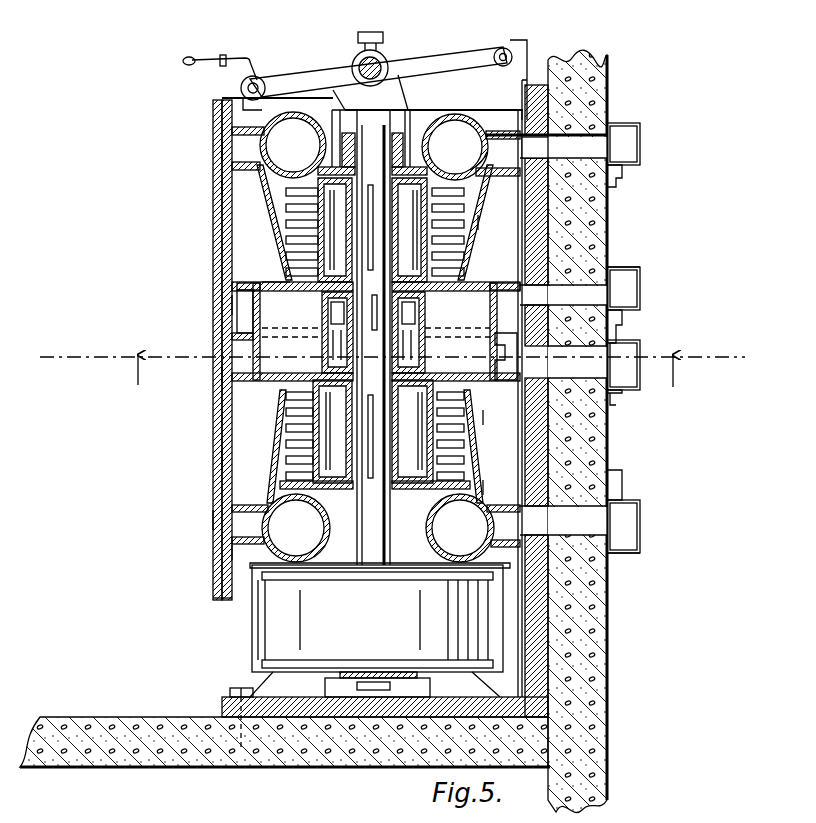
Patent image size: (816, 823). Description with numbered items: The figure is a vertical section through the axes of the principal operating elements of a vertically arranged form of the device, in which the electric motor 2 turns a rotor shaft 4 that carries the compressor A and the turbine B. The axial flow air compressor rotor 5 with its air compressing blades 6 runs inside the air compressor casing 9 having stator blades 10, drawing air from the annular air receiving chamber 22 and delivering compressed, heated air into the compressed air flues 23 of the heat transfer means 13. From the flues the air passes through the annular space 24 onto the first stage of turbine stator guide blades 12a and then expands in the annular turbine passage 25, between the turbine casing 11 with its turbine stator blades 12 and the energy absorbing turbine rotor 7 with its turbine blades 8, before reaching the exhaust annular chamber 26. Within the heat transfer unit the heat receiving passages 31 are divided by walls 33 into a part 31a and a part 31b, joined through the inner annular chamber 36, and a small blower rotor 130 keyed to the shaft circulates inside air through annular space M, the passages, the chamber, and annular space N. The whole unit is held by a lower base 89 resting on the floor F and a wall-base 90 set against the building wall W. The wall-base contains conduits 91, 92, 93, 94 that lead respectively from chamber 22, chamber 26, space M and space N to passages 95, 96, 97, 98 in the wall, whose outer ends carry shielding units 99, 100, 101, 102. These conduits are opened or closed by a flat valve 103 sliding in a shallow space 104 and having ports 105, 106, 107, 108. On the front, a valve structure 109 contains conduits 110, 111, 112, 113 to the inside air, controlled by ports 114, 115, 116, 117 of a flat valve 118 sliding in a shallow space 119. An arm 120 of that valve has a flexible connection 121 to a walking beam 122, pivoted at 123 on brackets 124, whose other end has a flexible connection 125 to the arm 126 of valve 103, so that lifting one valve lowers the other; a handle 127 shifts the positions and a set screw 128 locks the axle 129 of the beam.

The electric motor 2 is at (377, 618).
The rotor shaft 4 is at (448, 686).
The axial flow air compressor rotor 5 is at (412, 472).
The air compressing blades 6 is at (448, 495).
The energy absorbing turbine rotor 7 is at (410, 262).
The turbine blades 8 is at (287, 188).
The air compressor casing 9 is at (483, 462).
The stator blades 10 is at (478, 407).
The turbine casing 11 is at (265, 195).
The turbine stator blades 12 is at (268, 205).
The first stage of turbine stator guide blades 12a is at (478, 262).
The heat transfer means 13 is at (275, 270).
The air receiving chamber 22 is at (376, 528).
The compressed air flues 23 is at (431, 332).
The annular space 24 is at (305, 287).
The annular turbine passage 25 is at (478, 165).
The exhaust annular chamber 26 is at (376, 146).
The heat receiving passages 31 is at (437, 365).
The heat receiving space part 31a is at (252, 392).
The heat receiving space part 31b is at (248, 318).
The dividing walls 33 is at (302, 343).
The inner annular chamber 36 is at (445, 330).
The lower base 89 is at (222, 710).
The wall-base 90 is at (540, 85).
The conduit 91 is at (563, 520).
The conduit 92 is at (546, 146).
The conduit 93 is at (640, 350).
The conduit 94 is at (563, 293).
The passage 95 is at (612, 520).
The passage 96 is at (616, 152).
The passage 97 is at (635, 380).
The passage 98 is at (618, 268).
The shielding unit 99 is at (645, 546).
The shielding unit 100 is at (628, 395).
The shielding unit 101 is at (640, 290).
The shielding unit 102 is at (640, 126).
The flat valve 103 is at (513, 110).
The shallow space 104 is at (533, 645).
The port 105 is at (527, 522).
The port 106 is at (522, 148).
The port 107 is at (618, 330).
The port 108 is at (593, 233).
The valve structure 109 is at (216, 108).
The conduit 110 is at (222, 520).
The conduit 111 is at (220, 150).
The conduit 112 is at (220, 350).
The conduit 113 is at (220, 292).
The port 114 is at (230, 556).
The port 115 is at (220, 186).
The port 116 is at (226, 380).
The port 117 is at (222, 305).
The flat valve 118 is at (228, 463).
The shallow space 119 is at (228, 600).
The arm 120 is at (238, 84).
The flexible connection 121 is at (262, 78).
The walking beam 122 is at (412, 75).
The pivot 123 is at (385, 42).
The brackets 124 is at (340, 94).
The flexible connection 125 is at (498, 50).
The arm 126 is at (530, 45).
The handle 127 is at (183, 64).
The set screw 128 is at (352, 58).
The axle 129 is at (398, 96).
The blower rotor 130 is at (313, 347).
The annular space N is at (250, 286).
The turbine B is at (484, 218).
The annular space M is at (493, 422).
The compressor A is at (474, 490).
The building wall W is at (613, 615).
The floor F is at (57, 717).